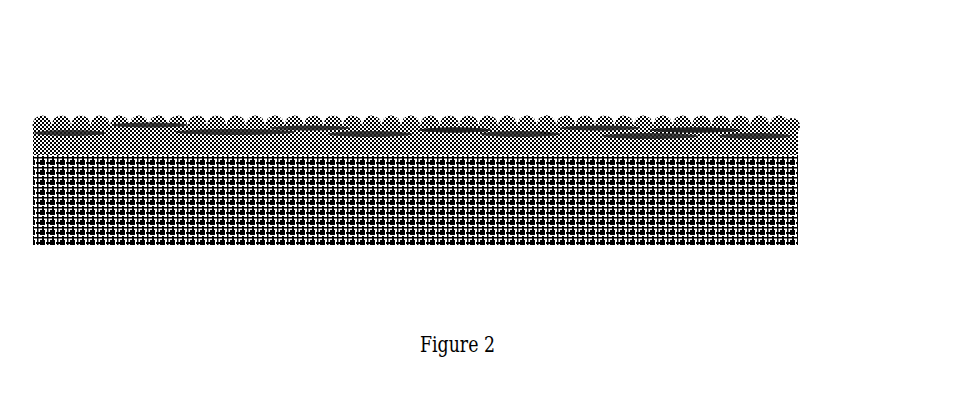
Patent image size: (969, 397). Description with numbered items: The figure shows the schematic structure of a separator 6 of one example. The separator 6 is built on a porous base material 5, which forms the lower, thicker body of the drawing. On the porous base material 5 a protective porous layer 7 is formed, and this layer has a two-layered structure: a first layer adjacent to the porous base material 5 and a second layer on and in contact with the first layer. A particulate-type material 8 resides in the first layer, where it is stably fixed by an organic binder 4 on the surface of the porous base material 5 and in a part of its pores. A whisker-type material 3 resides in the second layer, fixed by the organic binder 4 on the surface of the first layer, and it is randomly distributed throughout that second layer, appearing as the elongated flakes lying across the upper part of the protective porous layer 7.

The whisker-type material 3 is at (680, 125).
The organic binder 4 is at (455, 123).
The porous base material 5 is at (708, 245).
The separator 6 is at (459, 209).
The protective porous layer 7 is at (803, 117).
The particulate-type material 8 is at (557, 125).